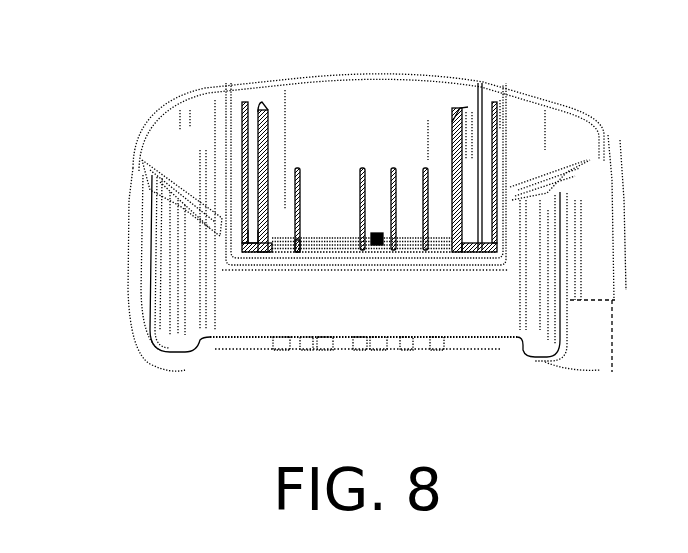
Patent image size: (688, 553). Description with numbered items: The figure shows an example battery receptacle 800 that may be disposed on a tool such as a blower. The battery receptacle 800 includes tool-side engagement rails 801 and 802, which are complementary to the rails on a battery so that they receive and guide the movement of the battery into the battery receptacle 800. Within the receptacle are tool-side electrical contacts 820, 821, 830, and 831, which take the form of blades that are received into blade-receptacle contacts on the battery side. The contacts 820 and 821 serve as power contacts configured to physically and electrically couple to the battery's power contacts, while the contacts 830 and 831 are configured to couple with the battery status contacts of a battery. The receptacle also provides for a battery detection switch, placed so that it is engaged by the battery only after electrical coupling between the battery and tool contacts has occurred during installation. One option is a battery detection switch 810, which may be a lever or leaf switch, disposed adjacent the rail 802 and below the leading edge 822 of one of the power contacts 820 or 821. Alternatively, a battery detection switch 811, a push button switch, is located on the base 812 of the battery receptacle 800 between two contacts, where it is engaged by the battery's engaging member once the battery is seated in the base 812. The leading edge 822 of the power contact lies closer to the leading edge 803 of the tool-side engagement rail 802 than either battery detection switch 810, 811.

The battery receptacle 800 is at (455, 36).
The tool-side engagement rail 801 is at (468, 107).
The tool-side engagement rail 802 is at (257, 180).
The leading edge of tool-side engagement rail 803 is at (258, 100).
The battery detection switch 810 is at (248, 236).
The battery detection switch 811 is at (376, 244).
The base 812 is at (322, 245).
The tool-side electrical contact 820 is at (297, 243).
The tool-side electrical contact 821 is at (426, 198).
The leading edge of power contact 822 is at (297, 168).
The tool-side electrical contact 830 is at (393, 223).
The tool-side electrical contact 831 is at (363, 243).